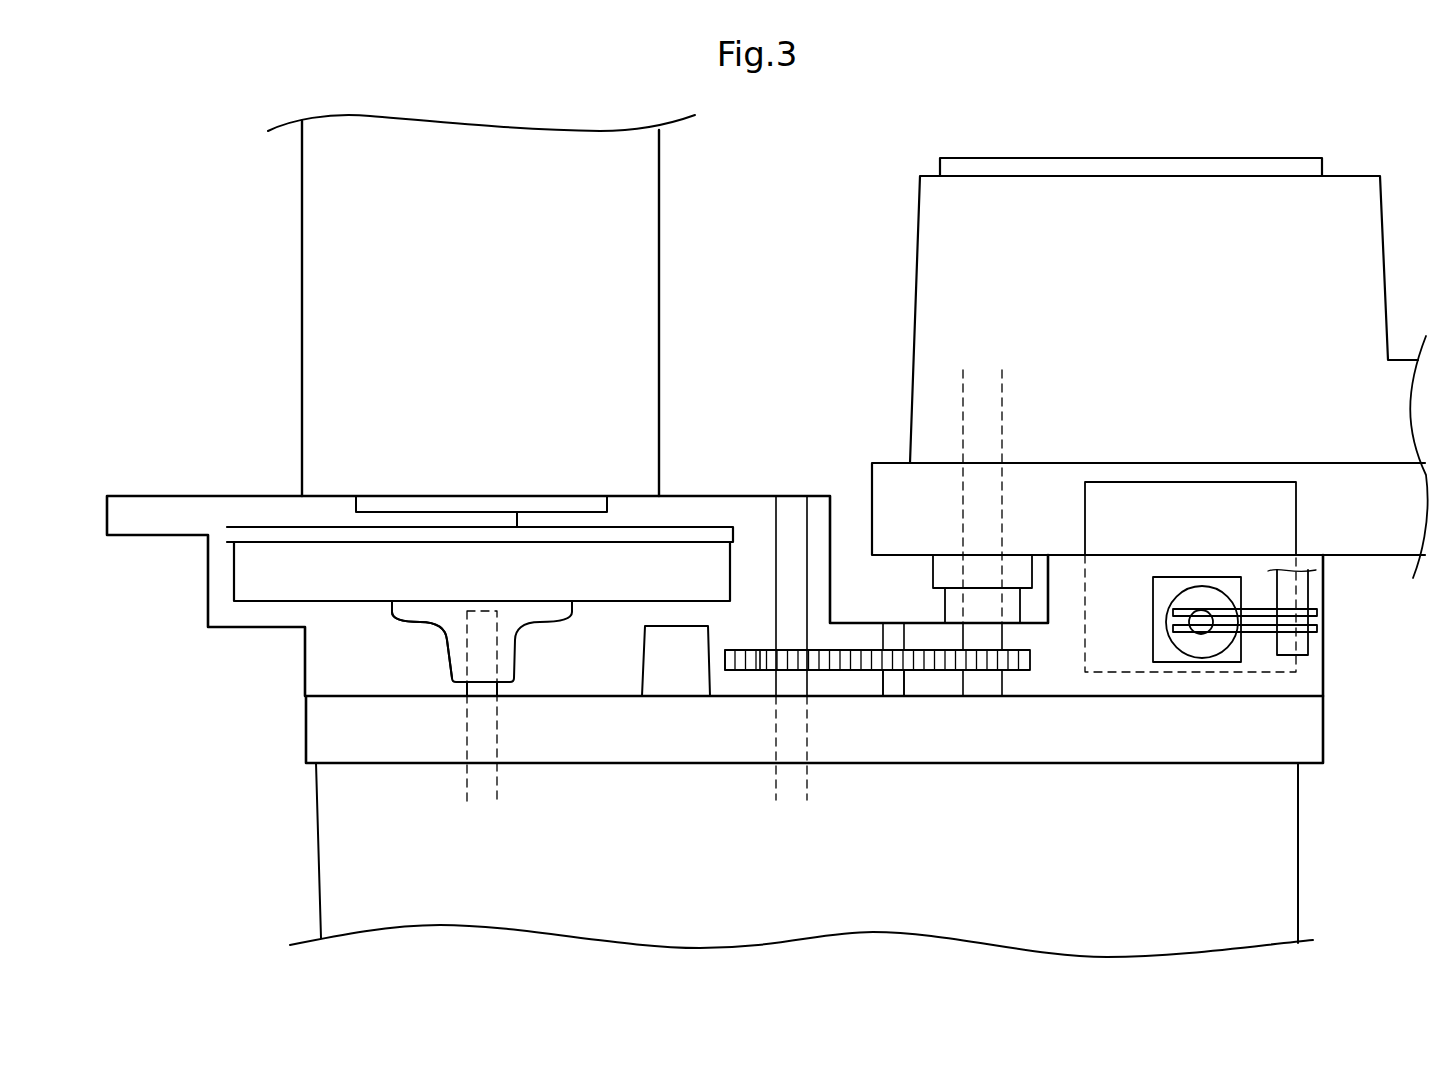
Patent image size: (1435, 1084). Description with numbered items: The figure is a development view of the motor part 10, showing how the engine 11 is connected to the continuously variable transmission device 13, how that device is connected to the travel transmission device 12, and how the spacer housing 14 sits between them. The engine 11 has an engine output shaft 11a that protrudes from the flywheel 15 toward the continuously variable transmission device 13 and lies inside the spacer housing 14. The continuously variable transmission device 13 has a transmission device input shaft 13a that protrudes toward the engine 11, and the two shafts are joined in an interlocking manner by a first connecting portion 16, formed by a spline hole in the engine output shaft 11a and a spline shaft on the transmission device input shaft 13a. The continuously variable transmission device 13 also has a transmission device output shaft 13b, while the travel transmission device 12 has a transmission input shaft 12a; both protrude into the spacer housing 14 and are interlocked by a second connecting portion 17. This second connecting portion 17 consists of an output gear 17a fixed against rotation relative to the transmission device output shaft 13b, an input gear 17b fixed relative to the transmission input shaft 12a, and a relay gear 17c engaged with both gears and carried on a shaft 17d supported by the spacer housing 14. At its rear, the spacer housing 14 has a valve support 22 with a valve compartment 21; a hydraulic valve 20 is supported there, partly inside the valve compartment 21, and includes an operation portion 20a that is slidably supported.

The motor part 10 is at (237, 407).
The engine 11 is at (661, 281).
The engine output shaft 11a is at (517, 647).
The travel transmission device 12 is at (910, 292).
The transmission input shaft 12a is at (1003, 513).
The continuously variable transmission device 13 is at (316, 866).
The transmission device input shaft 13a is at (467, 733).
The transmission device output shaft 13b is at (794, 513).
The spacer housing 14 is at (257, 632).
The flywheel 15 is at (268, 572).
The first connecting portion 16 is at (432, 648).
The second connecting portion 17 is at (930, 680).
The output gear 17a is at (755, 670).
The input gear 17b is at (1015, 672).
The relay gear 17c is at (873, 670).
The shaft 17d is at (895, 677).
The hydraulic valve 20 is at (1170, 512).
The operation portion 20a is at (1201, 622).
The valve compartment 21 is at (1142, 675).
The valve support 22 is at (1168, 684).